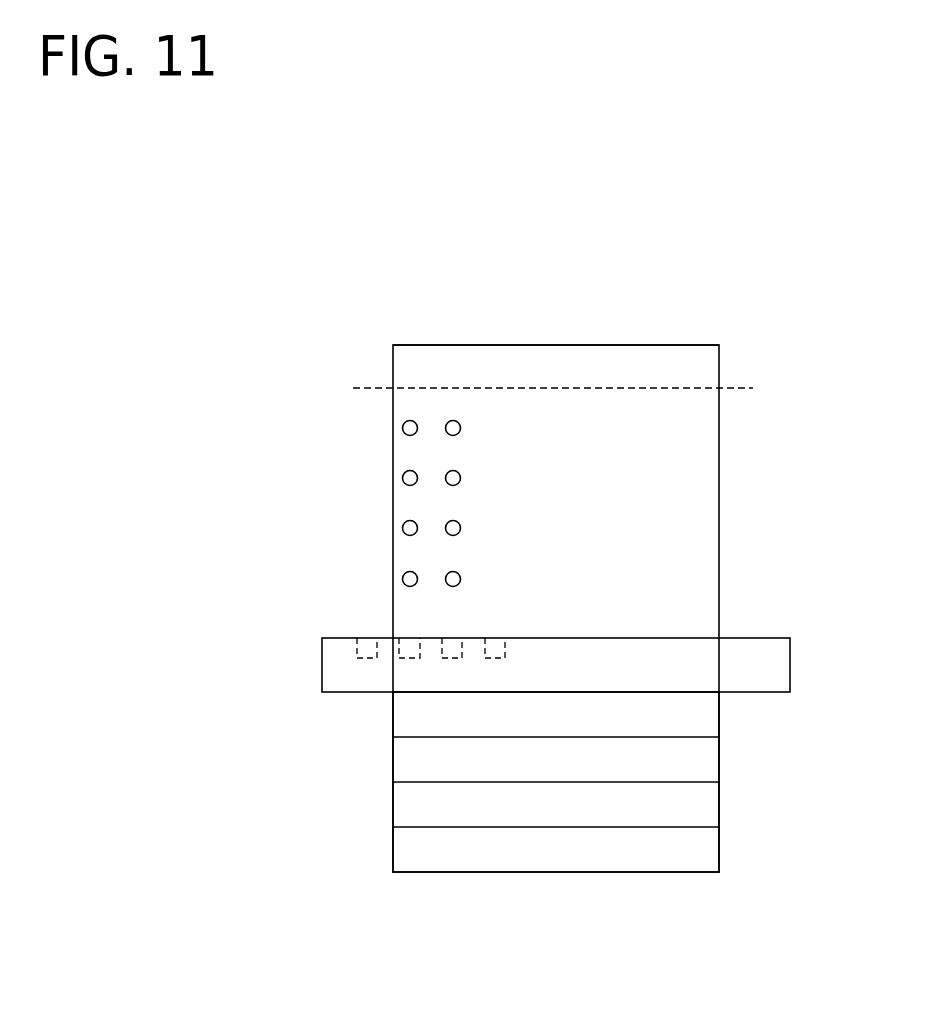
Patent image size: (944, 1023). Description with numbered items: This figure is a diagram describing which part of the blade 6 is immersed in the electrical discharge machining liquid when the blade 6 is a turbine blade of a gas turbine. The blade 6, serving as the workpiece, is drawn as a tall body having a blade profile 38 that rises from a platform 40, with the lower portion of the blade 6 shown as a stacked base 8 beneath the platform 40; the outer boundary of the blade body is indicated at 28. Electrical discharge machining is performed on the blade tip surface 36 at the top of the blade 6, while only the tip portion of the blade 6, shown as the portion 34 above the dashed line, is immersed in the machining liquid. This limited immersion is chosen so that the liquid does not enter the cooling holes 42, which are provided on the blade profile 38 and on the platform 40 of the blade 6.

The blade 6 is at (815, 347).
The substrate 8 is at (719, 758).
The housing 28 is at (719, 442).
The portion 34 is at (600, 358).
The blade tip surface 36 is at (497, 345).
The blade profile 38 is at (670, 522).
The platform 40 is at (342, 638).
The cooling hole 42 is at (402, 430).